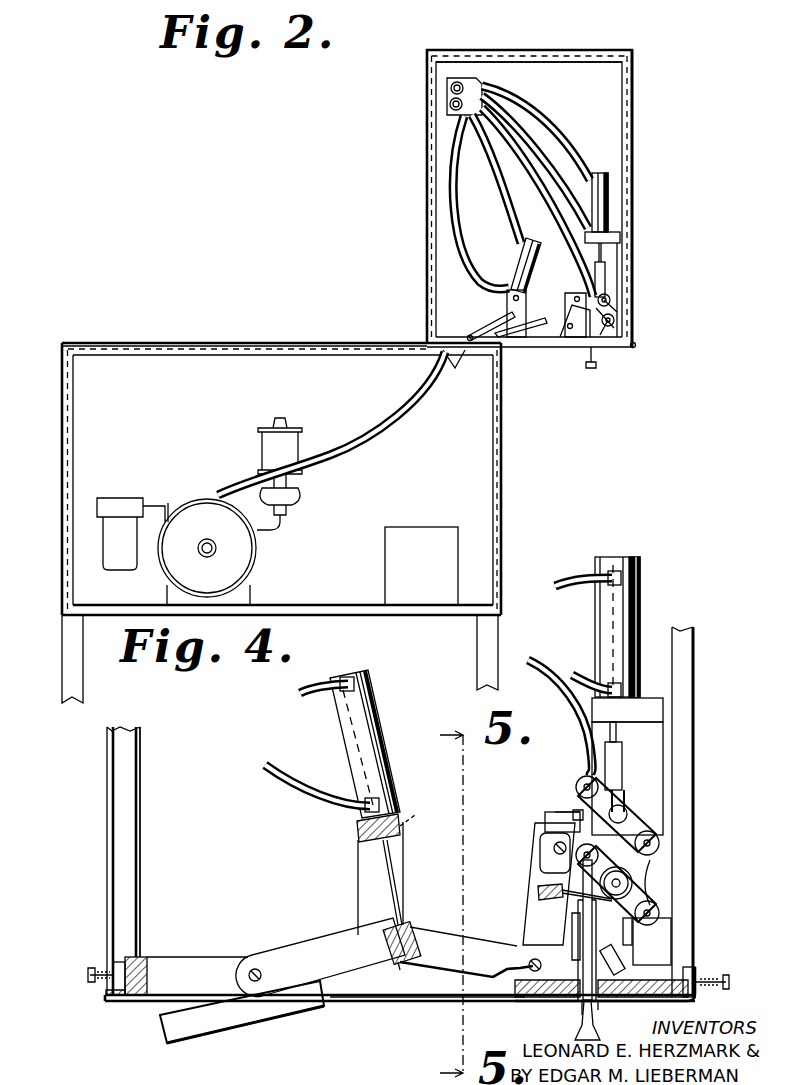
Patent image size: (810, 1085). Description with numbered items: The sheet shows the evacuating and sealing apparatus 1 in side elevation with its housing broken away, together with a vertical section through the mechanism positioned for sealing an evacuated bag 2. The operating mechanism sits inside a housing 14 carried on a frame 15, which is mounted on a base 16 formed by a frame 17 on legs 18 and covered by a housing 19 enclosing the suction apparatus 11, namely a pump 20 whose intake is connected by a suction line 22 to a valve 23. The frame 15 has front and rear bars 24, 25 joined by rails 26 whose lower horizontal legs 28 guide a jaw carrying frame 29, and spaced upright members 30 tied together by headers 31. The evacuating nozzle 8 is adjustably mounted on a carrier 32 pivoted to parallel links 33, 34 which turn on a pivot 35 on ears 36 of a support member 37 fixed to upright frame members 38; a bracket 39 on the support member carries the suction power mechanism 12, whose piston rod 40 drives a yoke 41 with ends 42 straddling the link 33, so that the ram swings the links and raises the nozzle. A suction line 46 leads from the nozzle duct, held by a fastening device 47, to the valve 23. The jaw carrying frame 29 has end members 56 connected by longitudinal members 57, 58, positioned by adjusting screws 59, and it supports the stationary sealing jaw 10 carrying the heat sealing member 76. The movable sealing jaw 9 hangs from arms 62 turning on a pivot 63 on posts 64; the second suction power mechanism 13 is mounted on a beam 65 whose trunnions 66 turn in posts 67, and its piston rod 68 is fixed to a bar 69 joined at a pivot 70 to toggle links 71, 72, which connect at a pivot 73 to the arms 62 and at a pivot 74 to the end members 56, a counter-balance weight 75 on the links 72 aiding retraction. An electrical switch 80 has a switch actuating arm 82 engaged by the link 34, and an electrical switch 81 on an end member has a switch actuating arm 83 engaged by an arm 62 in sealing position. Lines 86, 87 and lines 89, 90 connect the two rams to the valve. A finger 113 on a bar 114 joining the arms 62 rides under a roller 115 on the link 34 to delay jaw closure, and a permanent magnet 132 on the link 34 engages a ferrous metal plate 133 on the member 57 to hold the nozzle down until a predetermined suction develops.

In FIG. 2, the apparatus 1 is at (350, 345).
In FIG. 4, the bag 2 is at (580, 1015).
In FIG. 2, the evacuating nozzle 8 is at (596, 365).
In FIG. 4, the sealing jaw 9 is at (515, 997).
In FIG. 4, the sealing jaw 10 is at (605, 1008).
In FIG. 2, the suction apparatus 11 is at (212, 496).
In FIG. 2, the suction power mechanism 12 is at (606, 175).
In FIG. 4, the suction power mechanism 12 is at (625, 600).
In FIG. 2, the suction power mechanism 13 is at (524, 258).
In FIG. 4, the suction power mechanism 13 is at (362, 712).
In FIG. 2, the housing 14 is at (600, 50).
In FIG. 2, the frame 15 is at (632, 68).
In FIG. 4, the frame 15 is at (148, 823).
In FIG. 2, the base 16 is at (70, 396).
In FIG. 2, the frame 17 is at (68, 510).
In FIG. 2, the legs 18 is at (62, 643).
In FIG. 2, the housing 19 is at (120, 343).
In FIG. 2, the pump 20 is at (245, 562).
In FIG. 2, the suction line 22 is at (385, 446).
In FIG. 2, the valve 23 is at (458, 78).
In FIG. 4, the front member 24 is at (697, 998).
In FIG. 4, the rear member 25 is at (113, 995).
In FIG. 4, the rail 26 is at (158, 1000).
In FIG. 4, the lower horizontal legs 28 is at (120, 1005).
In FIG. 4, the jaw carrying frame 29 is at (185, 955).
In FIG. 2, the upright members 30 is at (622, 96).
In FIG. 4, the upright members 30 is at (138, 762).
In FIG. 2, the header 31 is at (552, 52).
In FIG. 4, the carrier 32 is at (578, 792).
In FIG. 2, the parallel link 33 is at (612, 297).
In FIG. 4, the parallel link 33 is at (582, 783).
In FIG. 2, the parallel link 34 is at (616, 316).
In FIG. 4, the parallel link 34 is at (596, 855).
In FIG. 4, the pivot 35 is at (658, 905).
In FIG. 4, the ears 36 is at (660, 840).
In FIG. 2, the support member 37 is at (618, 248).
In FIG. 4, the support member 37 is at (680, 735).
In FIG. 4, the upright frame members 38 is at (690, 658).
In FIG. 2, the bracket 39 is at (612, 235).
In FIG. 4, the bracket 39 is at (655, 703).
In FIG. 2, the piston rod 40 is at (604, 258).
In FIG. 4, the piston rod 40 is at (620, 740).
In FIG. 2, the yoke 41 is at (606, 278).
In FIG. 4, the yoke 41 is at (625, 762).
In FIG. 4, the yoke ends 42 is at (625, 808).
In FIG. 2, the suction line 46 is at (572, 224).
In FIG. 4, the suction line 46 is at (555, 683).
In FIG. 4, the fastening device 47 is at (570, 812).
In FIG. 2, the end members 56 is at (540, 343).
In FIG. 4, the end members 56 is at (436, 985).
In FIG. 4, the longitudinal member 57 is at (712, 965).
In FIG. 4, the longitudinal member 58 is at (145, 955).
In FIG. 2, the adjusting screws 59 is at (636, 347).
In FIG. 4, the adjusting screws 59 is at (92, 972).
In FIG. 2, the arms 62 is at (560, 304).
In FIG. 4, the arms 62 is at (532, 898).
In FIG. 4, the pivot 63 is at (548, 818).
In FIG. 2, the posts 64 is at (572, 342).
In FIG. 4, the posts 64 is at (545, 835).
In FIG. 4, the beam 65 is at (356, 832).
In FIG. 4, the trunnions 66 is at (420, 815).
In FIG. 2, the posts 67 is at (490, 320).
In FIG. 4, the posts 67 is at (400, 848).
In FIG. 4, the piston rod 68 is at (386, 876).
In FIG. 4, the bar 69 is at (388, 942).
In FIG. 4, the pivot 70 is at (398, 975).
In FIG. 2, the toggle links 71 is at (532, 342).
In FIG. 4, the toggle links 71 is at (468, 950).
In FIG. 2, the toggle links 72 is at (488, 358).
In FIG. 4, the toggle links 72 is at (332, 945).
In FIG. 4, the pivot 73 is at (529, 963).
In FIG. 4, the pivot 74 is at (263, 975).
In FIG. 2, the counter-balance weight 75 is at (453, 356).
In FIG. 4, the counter-balance weight 75 is at (250, 1015).
In FIG. 4, the heat sealing member 76 is at (600, 1025).
In FIG. 4, the electrical switch 80 is at (655, 955).
In FIG. 4, the electrical switch 81 is at (560, 995).
In FIG. 4, the switch actuating arm 82 is at (642, 935).
In FIG. 4, the switch actuating arm 83 is at (575, 950).
In FIG. 2, the line 86 is at (572, 166).
In FIG. 4, the line 86 is at (570, 580).
In FIG. 2, the line 87 is at (462, 240).
In FIG. 4, the line 87 is at (285, 780).
In FIG. 2, the line 89 is at (540, 152).
In FIG. 4, the line 89 is at (582, 672).
In FIG. 2, the line 90 is at (503, 205).
In FIG. 4, the line 90 is at (308, 690).
In FIG. 4, the finger 113 is at (565, 862).
In FIG. 4, the bar 114 is at (540, 886).
In FIG. 4, the roller 115 is at (628, 880).
In FIG. 4, the permanent magnet 132 is at (660, 897).
In FIG. 4, the ferrous metal plate 133 is at (614, 964).